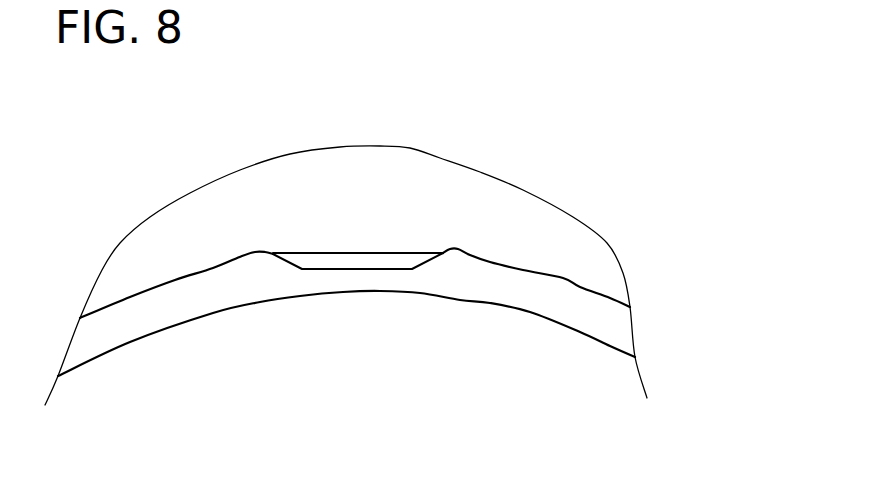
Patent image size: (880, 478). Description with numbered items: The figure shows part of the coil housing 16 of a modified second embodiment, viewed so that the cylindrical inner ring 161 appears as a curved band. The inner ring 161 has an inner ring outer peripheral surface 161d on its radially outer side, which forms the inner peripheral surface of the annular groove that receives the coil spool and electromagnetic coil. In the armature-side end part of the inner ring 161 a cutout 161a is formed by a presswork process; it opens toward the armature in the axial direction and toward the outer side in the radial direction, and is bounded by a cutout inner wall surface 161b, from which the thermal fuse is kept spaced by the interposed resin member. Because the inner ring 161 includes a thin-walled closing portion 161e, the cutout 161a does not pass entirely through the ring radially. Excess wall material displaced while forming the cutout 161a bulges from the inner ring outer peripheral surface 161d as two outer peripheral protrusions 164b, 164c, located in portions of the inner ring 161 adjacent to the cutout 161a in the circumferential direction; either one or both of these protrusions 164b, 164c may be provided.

The coil housing 16 is at (608, 142).
The inner ring 161 is at (612, 323).
The cutout 161a is at (380, 252).
The cutout inner wall surface 161b is at (358, 263).
The inner ring outer peripheral surface 161d is at (580, 286).
The closing portion 161e is at (382, 280).
The outer peripheral protrusion 164b is at (245, 252).
The outer peripheral protrusion 164c is at (467, 247).